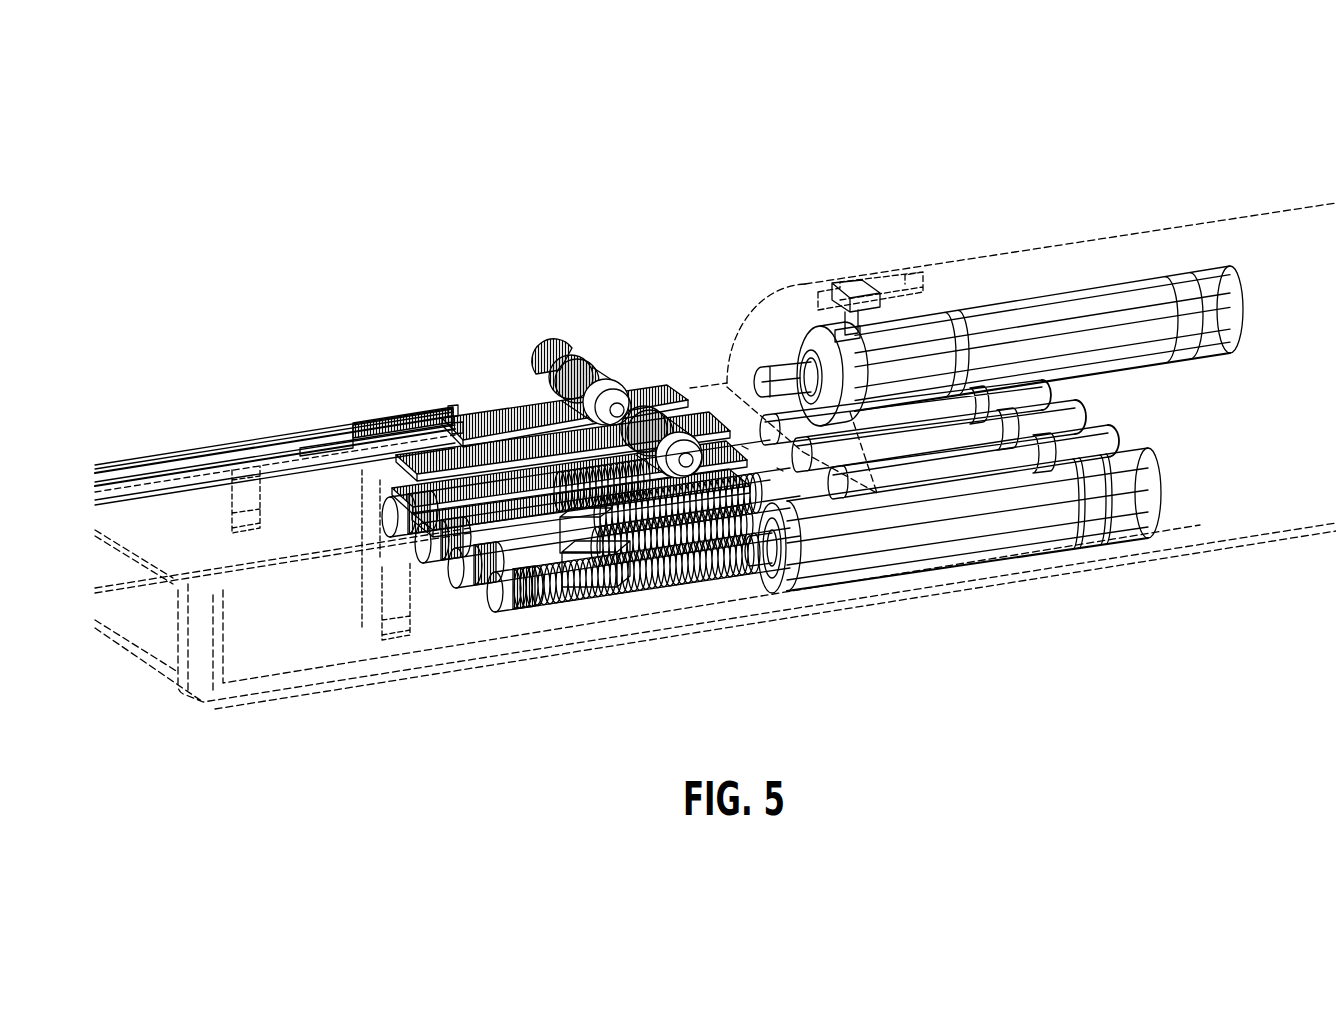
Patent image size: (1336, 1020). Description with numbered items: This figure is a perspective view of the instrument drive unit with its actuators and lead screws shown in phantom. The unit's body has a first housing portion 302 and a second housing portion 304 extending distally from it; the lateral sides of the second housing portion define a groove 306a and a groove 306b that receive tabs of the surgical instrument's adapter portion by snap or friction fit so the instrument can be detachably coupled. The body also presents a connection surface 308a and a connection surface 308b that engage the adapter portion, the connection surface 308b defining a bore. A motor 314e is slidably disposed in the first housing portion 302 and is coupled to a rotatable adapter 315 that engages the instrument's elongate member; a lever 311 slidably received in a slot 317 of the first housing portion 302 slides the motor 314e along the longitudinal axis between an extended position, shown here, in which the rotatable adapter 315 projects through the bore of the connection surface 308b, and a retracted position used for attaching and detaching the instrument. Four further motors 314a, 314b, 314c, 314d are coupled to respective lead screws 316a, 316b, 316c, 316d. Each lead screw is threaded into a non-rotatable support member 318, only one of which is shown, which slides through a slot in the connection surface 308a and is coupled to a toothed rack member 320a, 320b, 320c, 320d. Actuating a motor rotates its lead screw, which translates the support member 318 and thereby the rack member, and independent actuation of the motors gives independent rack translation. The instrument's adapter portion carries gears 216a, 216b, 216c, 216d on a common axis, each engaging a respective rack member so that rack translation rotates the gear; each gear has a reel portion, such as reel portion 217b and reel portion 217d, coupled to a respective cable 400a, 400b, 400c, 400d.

The first housing portion 302 is at (1200, 225).
The second housing portion 304 is at (240, 673).
The groove 306a is at (242, 497).
The groove 306b is at (393, 618).
The connection surface 308a is at (193, 588).
The connection surface 308b is at (745, 340).
The lever 311 is at (849, 282).
The motor 314a is at (1035, 393).
The motor 314b is at (1070, 416).
The motor 314c is at (1105, 442).
The motor 314d is at (1120, 537).
The motor 314e is at (1233, 343).
The rotatable adapter 315 is at (786, 383).
The lead screw 316a is at (378, 518).
The lead screw 316b is at (413, 548).
The lead screw 316c is at (470, 608).
The lead screw 316d is at (723, 577).
The slot 317 is at (897, 282).
The support member 318 is at (598, 572).
The rack member 320a is at (527, 402).
The rack member 320b is at (690, 580).
The rack member 320c is at (653, 590).
The rack member 320d is at (752, 490).
The gear 216a is at (557, 363).
The gear 216b is at (578, 372).
The gear 216c is at (652, 410).
The gear 216d is at (745, 447).
The reel portion 217b is at (610, 379).
The reel portion 217d is at (780, 470).
The cable 400a is at (450, 412).
The cable 400b is at (460, 430).
The cable 400c is at (403, 425).
The cable 400d is at (353, 437).